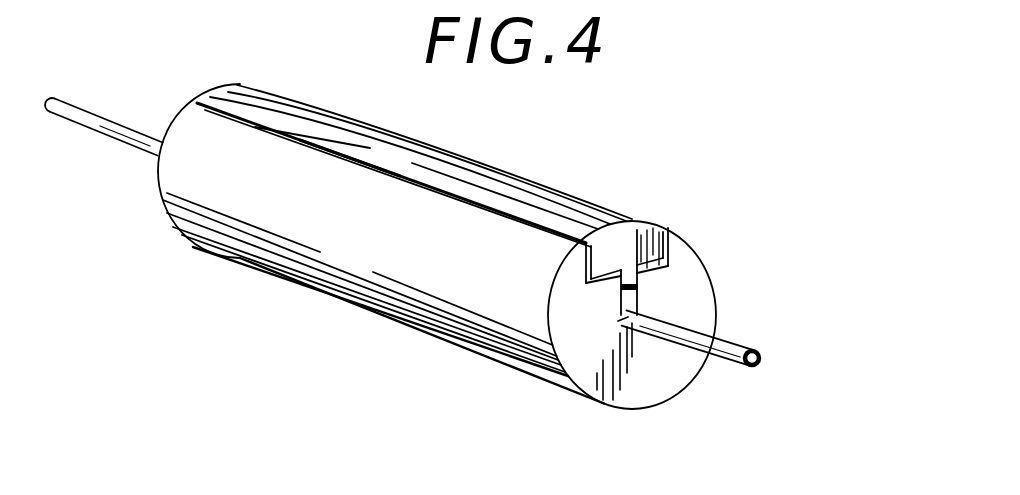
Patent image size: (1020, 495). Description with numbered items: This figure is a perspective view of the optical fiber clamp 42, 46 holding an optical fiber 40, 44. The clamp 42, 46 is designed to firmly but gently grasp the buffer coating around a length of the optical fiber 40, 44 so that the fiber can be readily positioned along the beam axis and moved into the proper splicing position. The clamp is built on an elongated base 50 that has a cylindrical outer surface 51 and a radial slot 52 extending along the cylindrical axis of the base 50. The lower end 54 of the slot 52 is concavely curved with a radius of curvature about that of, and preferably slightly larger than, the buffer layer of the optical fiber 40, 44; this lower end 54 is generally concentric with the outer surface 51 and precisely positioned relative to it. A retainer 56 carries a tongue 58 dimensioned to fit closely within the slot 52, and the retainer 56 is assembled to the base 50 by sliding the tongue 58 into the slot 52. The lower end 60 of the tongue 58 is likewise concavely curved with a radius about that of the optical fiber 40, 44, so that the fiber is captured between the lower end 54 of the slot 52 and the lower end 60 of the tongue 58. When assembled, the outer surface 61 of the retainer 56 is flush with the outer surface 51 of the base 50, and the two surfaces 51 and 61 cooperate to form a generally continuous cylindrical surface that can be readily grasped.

The optical fiber 40 is at (72, 107).
The optical fiber 44 is at (748, 342).
The clamp 42 is at (437, 246).
The clamp 46 is at (300, 309).
The elongated base 50 is at (638, 406).
The cylindrical outer surface 51 is at (495, 333).
The radial slot 52 is at (618, 292).
The lower end of the slot 54 is at (622, 323).
The retainer 56 is at (635, 228).
The tongue 58 is at (668, 271).
The lower end of the tongue 60 is at (640, 300).
The outer surface of the retainer 61 is at (512, 178).